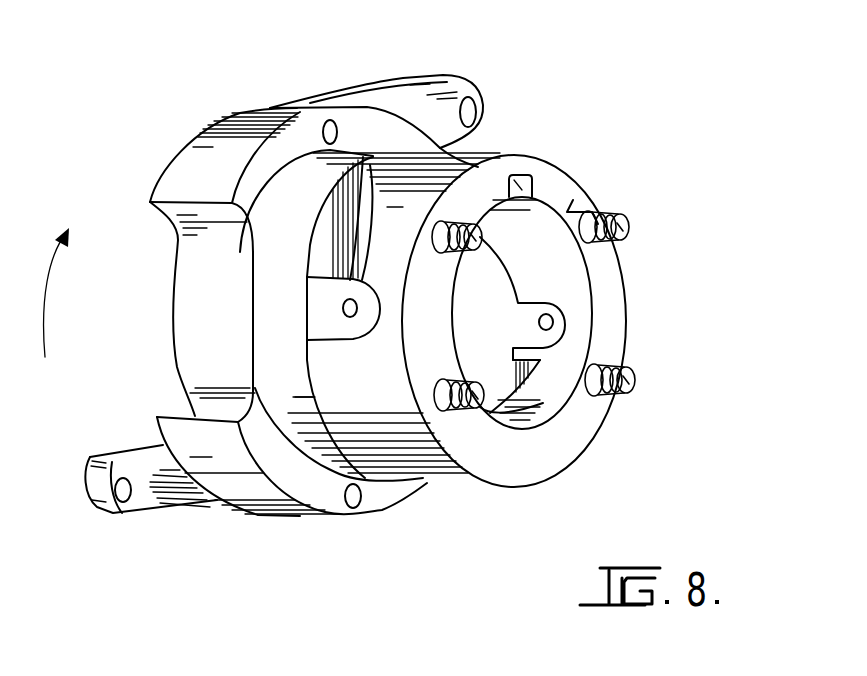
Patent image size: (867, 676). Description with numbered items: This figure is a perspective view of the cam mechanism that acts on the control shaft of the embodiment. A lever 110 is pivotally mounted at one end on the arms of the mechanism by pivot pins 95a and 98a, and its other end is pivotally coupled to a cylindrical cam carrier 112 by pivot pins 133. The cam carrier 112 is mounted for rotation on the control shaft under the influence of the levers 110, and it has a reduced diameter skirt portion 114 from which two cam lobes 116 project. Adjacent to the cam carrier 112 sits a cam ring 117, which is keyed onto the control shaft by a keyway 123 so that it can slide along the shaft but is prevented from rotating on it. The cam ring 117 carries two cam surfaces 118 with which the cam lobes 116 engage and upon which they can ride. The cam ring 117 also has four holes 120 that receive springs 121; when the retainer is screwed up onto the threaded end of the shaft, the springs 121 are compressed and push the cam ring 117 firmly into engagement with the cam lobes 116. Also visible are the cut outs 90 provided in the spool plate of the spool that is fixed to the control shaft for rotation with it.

The cut outs 90 is at (190, 380).
The pivot pin 95a is at (470, 106).
The pivot pin 98a is at (120, 488).
The lever 110 is at (392, 88).
The cylindrical cam carrier 112 is at (213, 140).
The reduced diameter skirt portion 114 is at (300, 207).
The cam lobes 116 is at (335, 309).
The cam ring 117 is at (417, 430).
The cam surfaces 118 is at (353, 233).
The holes 120 is at (573, 200).
The springs 121 is at (480, 236).
The keyway 123 is at (523, 177).
The pivot pins 133 is at (329, 120).